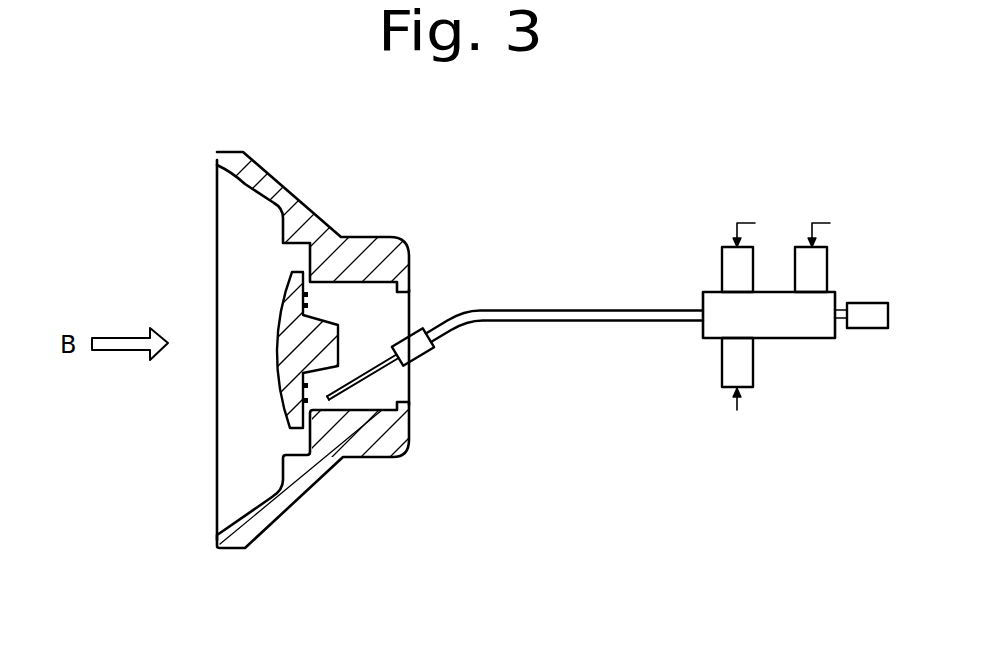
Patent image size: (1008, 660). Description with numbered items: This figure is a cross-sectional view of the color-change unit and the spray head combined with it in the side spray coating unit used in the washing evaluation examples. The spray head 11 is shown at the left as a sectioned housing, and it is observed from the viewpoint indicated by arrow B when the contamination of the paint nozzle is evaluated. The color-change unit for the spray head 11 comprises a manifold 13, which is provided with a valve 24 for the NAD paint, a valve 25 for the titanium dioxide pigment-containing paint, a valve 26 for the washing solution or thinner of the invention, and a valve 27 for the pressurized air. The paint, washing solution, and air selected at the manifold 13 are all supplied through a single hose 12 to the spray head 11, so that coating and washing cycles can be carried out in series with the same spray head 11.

The spray head 11 is at (362, 231).
The hose 12 is at (421, 356).
The manifold 13 is at (792, 338).
The valve 24 is at (722, 273).
The valve 25 is at (722, 366).
The valve 26 is at (827, 262).
The valve 27 is at (870, 328).